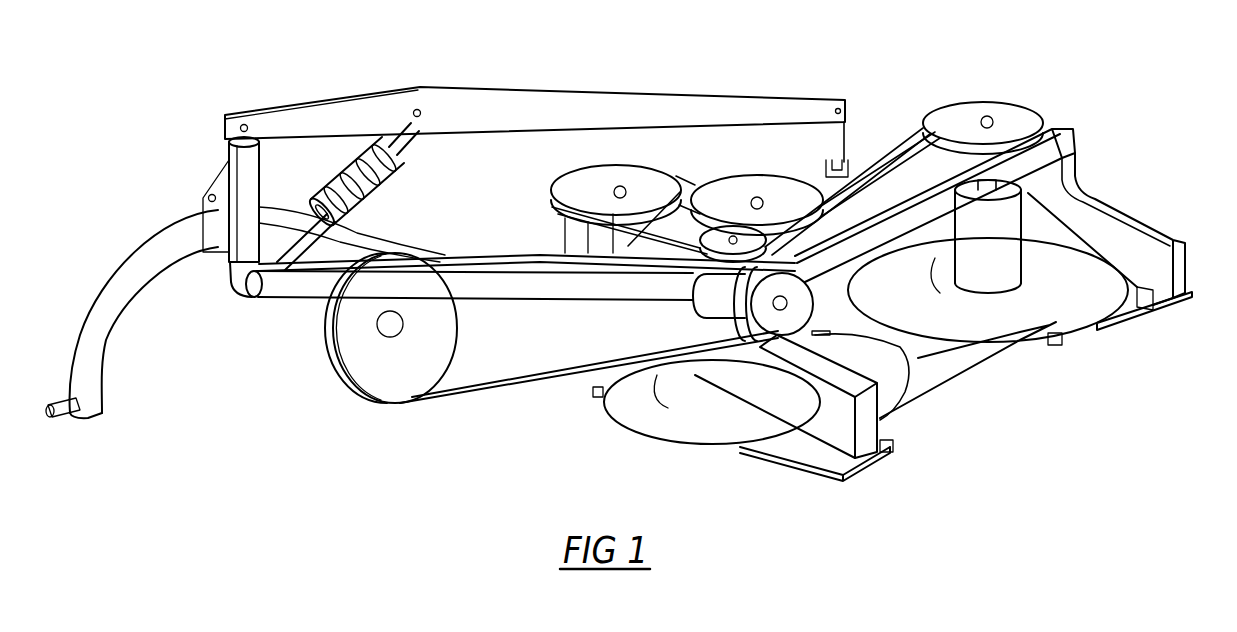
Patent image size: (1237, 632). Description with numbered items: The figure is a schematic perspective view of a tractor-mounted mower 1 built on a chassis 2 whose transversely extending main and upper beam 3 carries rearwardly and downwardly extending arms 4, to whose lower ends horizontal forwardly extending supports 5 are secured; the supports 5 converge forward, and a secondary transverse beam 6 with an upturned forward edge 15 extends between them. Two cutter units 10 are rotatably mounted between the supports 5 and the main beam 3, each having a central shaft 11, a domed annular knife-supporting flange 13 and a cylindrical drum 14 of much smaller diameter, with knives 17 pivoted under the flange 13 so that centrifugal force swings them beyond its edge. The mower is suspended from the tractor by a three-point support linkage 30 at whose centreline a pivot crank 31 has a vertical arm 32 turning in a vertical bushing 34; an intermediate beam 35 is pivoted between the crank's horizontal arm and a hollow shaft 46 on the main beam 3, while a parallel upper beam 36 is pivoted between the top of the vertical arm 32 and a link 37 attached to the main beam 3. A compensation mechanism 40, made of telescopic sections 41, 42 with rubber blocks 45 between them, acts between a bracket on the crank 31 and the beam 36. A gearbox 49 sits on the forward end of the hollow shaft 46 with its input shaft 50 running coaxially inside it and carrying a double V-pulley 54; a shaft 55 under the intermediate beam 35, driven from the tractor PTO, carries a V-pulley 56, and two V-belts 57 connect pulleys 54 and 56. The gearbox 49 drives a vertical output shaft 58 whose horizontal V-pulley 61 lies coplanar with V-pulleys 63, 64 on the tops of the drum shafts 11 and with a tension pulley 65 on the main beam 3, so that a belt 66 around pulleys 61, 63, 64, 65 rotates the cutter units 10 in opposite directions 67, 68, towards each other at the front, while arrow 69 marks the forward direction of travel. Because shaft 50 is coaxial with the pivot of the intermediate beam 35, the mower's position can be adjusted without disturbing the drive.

The mower 1 is at (1098, 115).
The chassis 2 is at (1132, 195).
The main and upper beam 3 is at (1057, 125).
The arms 4 is at (1156, 228).
The supports 5 is at (888, 458).
The secondary transverse beam 6 is at (950, 380).
The cutter units 10 is at (1097, 193).
The central shaft 11 is at (753, 200).
The knife-supporting flange 13 is at (722, 444).
The cylindrical body portion or drum 14 is at (957, 218).
The forward edge 15 is at (862, 341).
The knives 17 is at (597, 398).
The three-point support linkage 30 is at (150, 234).
The pivot crank 31 is at (232, 290).
The vertical arm 32 is at (228, 143).
The vertical bushing 34 is at (259, 210).
The intermediate beam 35 is at (568, 303).
The beam 36 is at (524, 93).
The link 37 is at (843, 148).
The compensation mechanism 40 is at (388, 192).
The telescopic section 41 is at (404, 148).
The telescopic section 42 is at (388, 242).
The rubber blocks 45 is at (342, 229).
The hollow shaft 46 is at (712, 322).
The gearbox 49 is at (560, 232).
The input shaft 50 is at (750, 327).
The double V-pulley 54 is at (780, 313).
The shaft 55 is at (389, 341).
The V-pulley 56 is at (457, 364).
The V-belts 57 is at (522, 394).
The vertical output shaft 58 is at (613, 188).
The V-pulley 61 is at (642, 163).
The V-pulley 63 is at (765, 173).
The V-pulley 64 is at (912, 130).
The tension pulley 65 is at (703, 245).
The belt 66 is at (887, 140).
The direction 67 is at (670, 412).
The direction 68 is at (932, 254).
The arrow 69 is at (1000, 393).